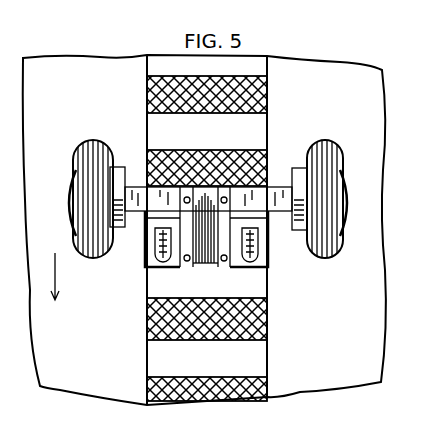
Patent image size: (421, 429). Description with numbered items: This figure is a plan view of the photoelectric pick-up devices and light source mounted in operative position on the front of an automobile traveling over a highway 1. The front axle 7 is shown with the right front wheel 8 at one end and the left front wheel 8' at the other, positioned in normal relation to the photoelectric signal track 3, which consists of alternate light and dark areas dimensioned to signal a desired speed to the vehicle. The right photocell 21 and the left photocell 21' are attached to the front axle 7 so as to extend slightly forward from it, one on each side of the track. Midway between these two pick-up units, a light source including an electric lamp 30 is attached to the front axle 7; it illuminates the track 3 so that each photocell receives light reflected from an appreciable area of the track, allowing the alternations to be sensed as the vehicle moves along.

The highway 1 is at (370, 82).
The photoelectric signal track 3 is at (263, 332).
The front axle 7 is at (283, 187).
The right front wheel 8 is at (88, 199).
The left front wheel 8' is at (327, 199).
The right photocell 21 is at (154, 236).
The left photocell 21' is at (257, 236).
The electric lamp 30 is at (205, 262).